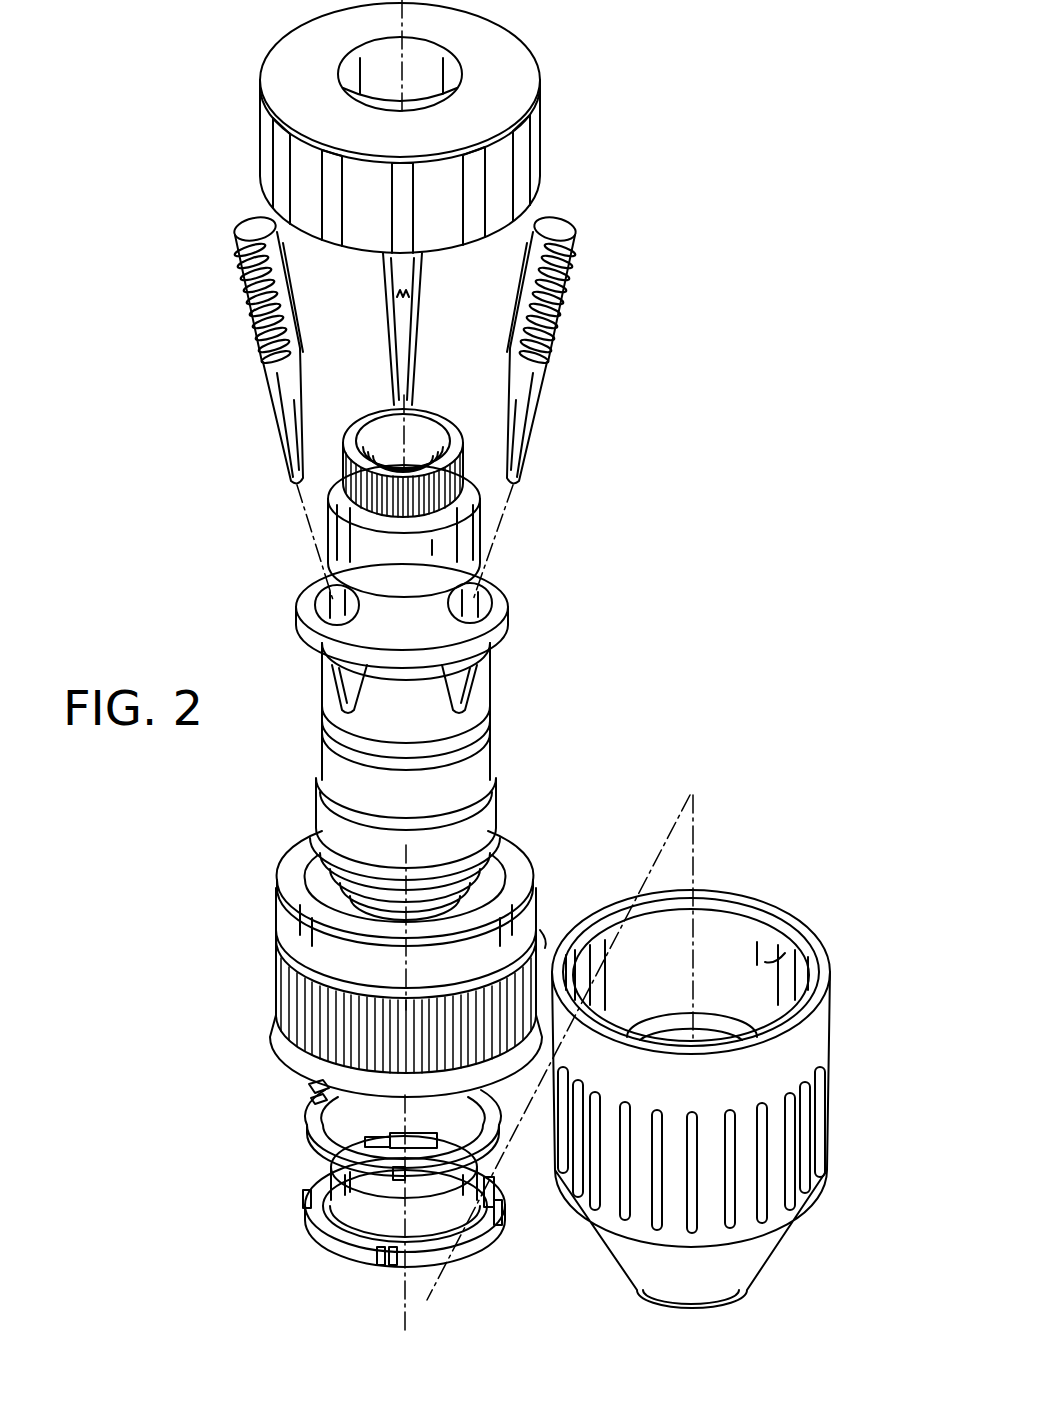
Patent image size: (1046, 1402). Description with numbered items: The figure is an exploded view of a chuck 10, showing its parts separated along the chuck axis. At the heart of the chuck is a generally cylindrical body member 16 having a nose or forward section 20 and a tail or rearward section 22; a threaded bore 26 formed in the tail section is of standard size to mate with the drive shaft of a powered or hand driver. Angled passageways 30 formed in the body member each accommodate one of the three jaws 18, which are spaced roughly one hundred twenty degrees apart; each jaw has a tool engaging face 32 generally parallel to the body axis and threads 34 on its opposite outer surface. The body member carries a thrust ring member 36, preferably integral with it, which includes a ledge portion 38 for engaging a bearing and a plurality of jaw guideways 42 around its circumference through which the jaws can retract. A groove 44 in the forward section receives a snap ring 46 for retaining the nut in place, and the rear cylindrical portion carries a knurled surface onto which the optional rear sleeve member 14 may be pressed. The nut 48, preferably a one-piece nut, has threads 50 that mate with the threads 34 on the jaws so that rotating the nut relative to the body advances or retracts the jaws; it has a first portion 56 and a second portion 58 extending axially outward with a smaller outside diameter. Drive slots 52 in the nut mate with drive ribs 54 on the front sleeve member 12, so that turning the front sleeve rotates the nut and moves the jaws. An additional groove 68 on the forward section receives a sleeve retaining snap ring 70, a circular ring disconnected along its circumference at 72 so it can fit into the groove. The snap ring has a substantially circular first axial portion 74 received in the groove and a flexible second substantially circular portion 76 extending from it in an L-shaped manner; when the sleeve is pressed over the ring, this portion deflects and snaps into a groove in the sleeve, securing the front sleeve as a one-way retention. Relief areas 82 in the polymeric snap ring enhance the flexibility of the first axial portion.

The chuck 10 is at (552, 593).
The front sleeve member 12 is at (820, 1026).
The rear sleeve member 14 is at (540, 115).
The body member 16 is at (492, 710).
The jaws 18 is at (547, 387).
The nose or forward section 20 is at (343, 785).
The tail or rearward section 22 is at (480, 515).
The threaded bore 26 is at (418, 447).
The passageways 30 is at (347, 687).
The tool engaging face 32 is at (303, 420).
The threads 34 is at (236, 250).
The thrust ring member 36 is at (492, 640).
The ledge portion 38 is at (318, 650).
The jaw guideways 42 is at (332, 582).
The groove 44 is at (477, 745).
The snap ring 46 is at (315, 1117).
The nut 48 is at (297, 952).
The threads 50 is at (317, 977).
The drive slots 52 is at (543, 948).
The drive ribs 54 is at (787, 953).
The first portion 56 is at (302, 1012).
The second portion 58 is at (488, 1065).
The groove 68 is at (470, 808).
The sleeve retaining snap ring 70 is at (442, 1255).
The disconnection 72 is at (410, 1180).
The first axial portion 74 is at (350, 1195).
The second substantially circular portion 76 is at (498, 1225).
The relief areas 82 is at (307, 1205).